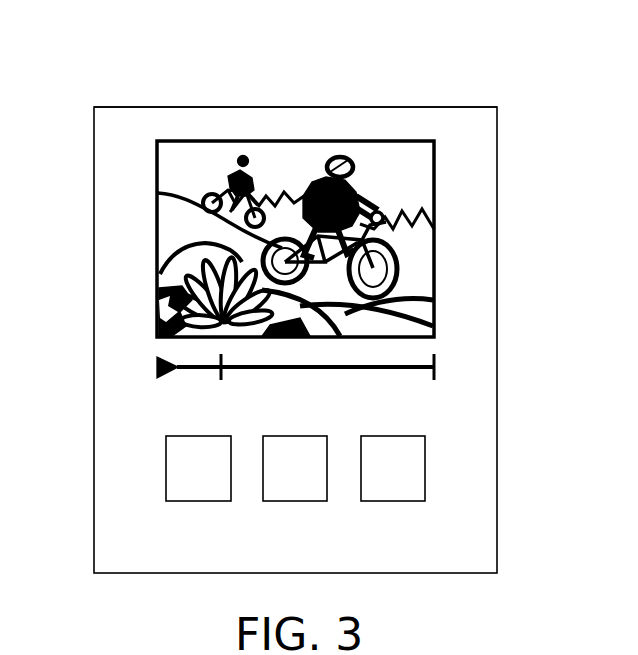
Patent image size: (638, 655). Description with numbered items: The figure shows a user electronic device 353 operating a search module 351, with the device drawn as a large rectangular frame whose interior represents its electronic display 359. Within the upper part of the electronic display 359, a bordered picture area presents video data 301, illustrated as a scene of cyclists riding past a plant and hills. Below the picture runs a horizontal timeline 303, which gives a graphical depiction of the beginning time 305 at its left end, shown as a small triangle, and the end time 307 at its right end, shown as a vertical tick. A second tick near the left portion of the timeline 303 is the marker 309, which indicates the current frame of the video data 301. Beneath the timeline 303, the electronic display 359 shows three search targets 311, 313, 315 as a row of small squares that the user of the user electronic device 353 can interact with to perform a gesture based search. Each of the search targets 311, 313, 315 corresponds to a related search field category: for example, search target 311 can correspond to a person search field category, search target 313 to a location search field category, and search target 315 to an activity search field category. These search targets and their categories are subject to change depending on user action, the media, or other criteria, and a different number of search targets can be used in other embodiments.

The search module 351 is at (140, 90).
The user electronic device 353 is at (418, 107).
The electronic display 359 is at (295, 190).
The video data 301 is at (205, 176).
The beginning time 305 is at (157, 365).
The timeline 303 is at (417, 364).
The marker 309 is at (222, 380).
The end time 307 is at (437, 373).
The search target 311 is at (215, 479).
The search target 313 is at (312, 479).
The search target 315 is at (410, 479).